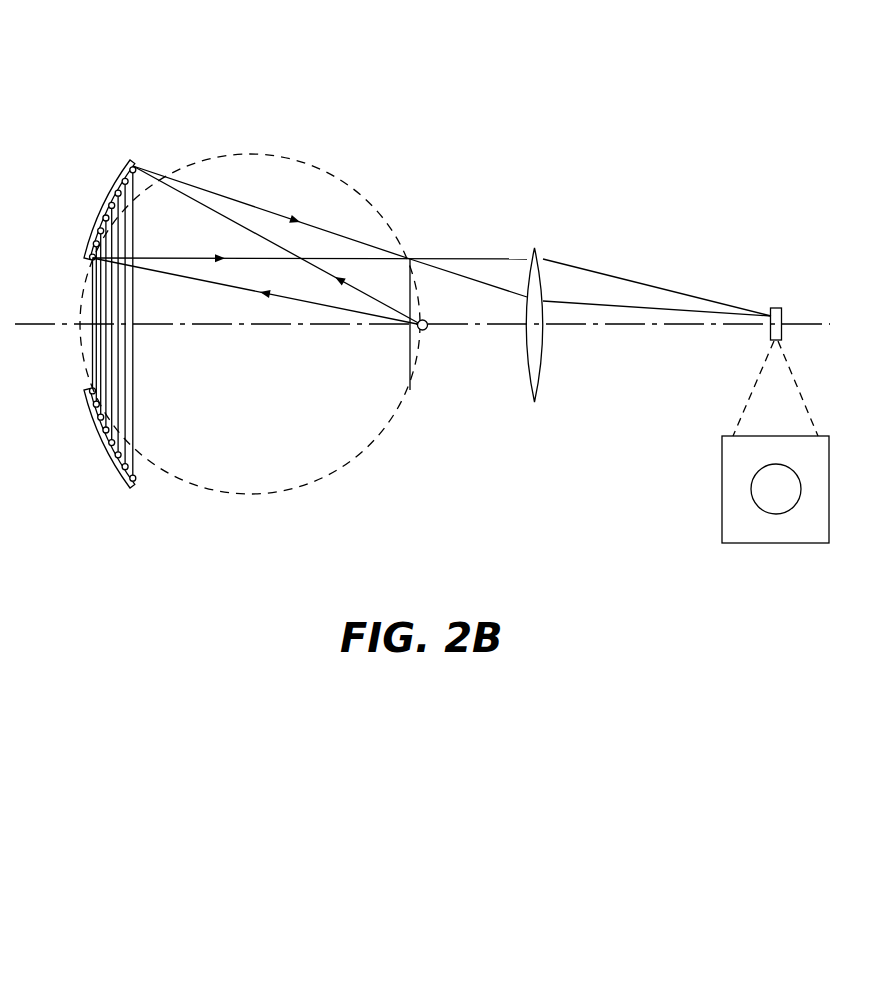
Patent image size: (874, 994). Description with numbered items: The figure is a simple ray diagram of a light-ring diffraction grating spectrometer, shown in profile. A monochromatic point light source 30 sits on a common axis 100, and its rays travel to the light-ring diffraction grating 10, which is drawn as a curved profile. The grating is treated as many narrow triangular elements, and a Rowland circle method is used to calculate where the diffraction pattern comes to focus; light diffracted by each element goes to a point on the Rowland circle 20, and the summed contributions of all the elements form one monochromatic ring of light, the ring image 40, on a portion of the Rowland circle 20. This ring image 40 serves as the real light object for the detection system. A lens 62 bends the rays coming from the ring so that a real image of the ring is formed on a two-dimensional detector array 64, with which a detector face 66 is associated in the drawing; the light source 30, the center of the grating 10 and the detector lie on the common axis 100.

The diffraction grating 10 is at (110, 197).
The Rowland circle 20 is at (252, 155).
The point light source 30 is at (427, 330).
The ring image 40 is at (410, 259).
The lens 62 is at (535, 250).
The detector array 64 is at (776, 308).
The detector face 66 is at (744, 535).
The common axis 100 is at (44, 325).